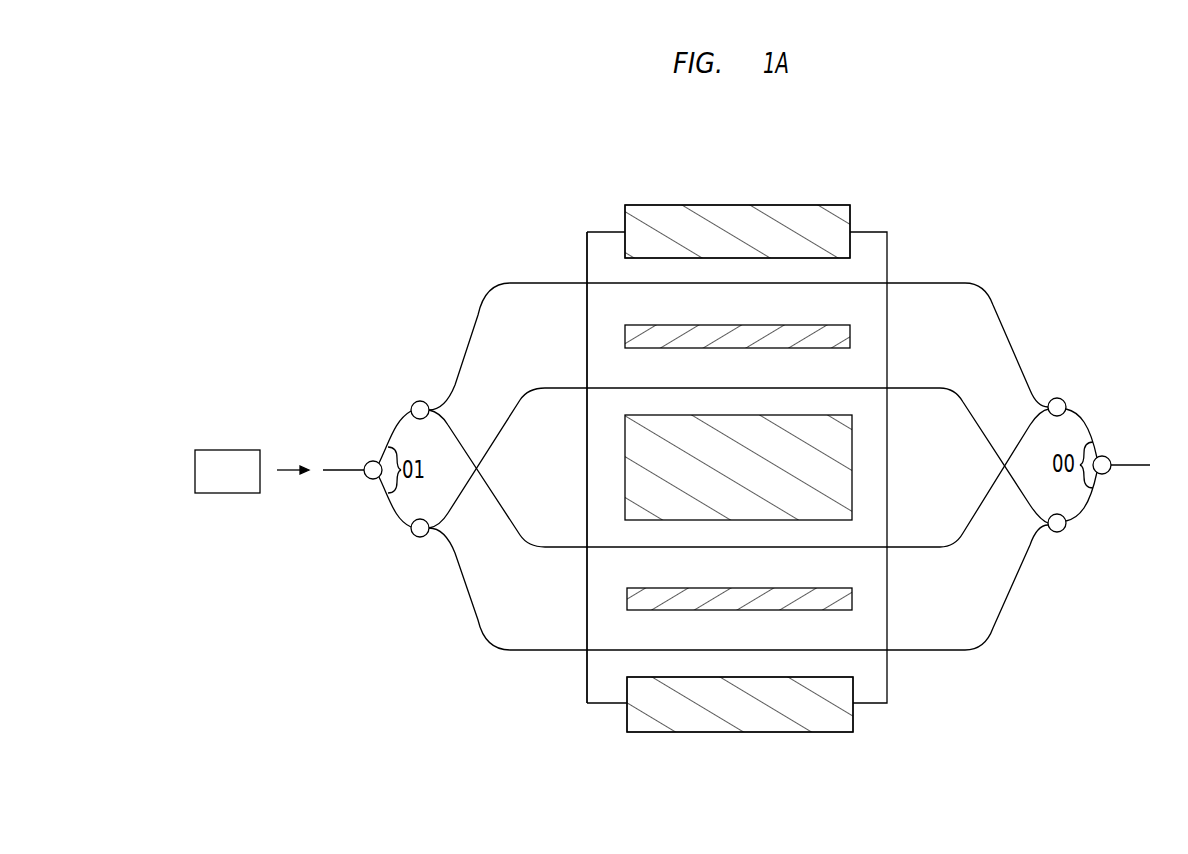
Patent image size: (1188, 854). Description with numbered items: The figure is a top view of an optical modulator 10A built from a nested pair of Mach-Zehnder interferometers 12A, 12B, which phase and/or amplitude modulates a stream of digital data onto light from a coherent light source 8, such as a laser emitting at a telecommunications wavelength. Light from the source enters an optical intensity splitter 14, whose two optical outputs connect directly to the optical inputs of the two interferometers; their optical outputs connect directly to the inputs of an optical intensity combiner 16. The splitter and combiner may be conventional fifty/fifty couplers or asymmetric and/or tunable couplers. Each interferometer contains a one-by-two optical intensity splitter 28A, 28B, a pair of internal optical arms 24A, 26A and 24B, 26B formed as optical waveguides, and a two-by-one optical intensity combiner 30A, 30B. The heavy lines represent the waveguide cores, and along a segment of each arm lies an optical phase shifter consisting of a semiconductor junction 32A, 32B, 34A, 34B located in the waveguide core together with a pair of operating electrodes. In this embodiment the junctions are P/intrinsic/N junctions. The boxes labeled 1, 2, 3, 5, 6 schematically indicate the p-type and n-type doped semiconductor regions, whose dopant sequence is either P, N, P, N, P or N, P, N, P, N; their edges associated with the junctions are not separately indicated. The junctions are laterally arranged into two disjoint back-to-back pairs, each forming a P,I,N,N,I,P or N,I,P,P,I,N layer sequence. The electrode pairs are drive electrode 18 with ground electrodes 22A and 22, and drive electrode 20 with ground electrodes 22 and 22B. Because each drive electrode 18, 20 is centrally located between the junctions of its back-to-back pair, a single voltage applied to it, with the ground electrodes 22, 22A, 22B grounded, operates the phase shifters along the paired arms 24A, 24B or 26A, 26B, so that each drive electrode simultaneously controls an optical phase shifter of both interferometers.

The coherent light source 8 is at (234, 486).
The optical modulator 10A is at (617, 531).
The Mach-Zehnder interferometer 12A is at (1088, 322).
The Mach-Zehnder interferometer 12B is at (1088, 608).
The optical intensity splitter 14 is at (366, 463).
The optical intensity combiner 16 is at (1108, 459).
The drive electrode 18 is at (815, 325).
The drive electrode 20 is at (815, 588).
The ground electrode 22 is at (745, 486).
The ground electrode 22A is at (742, 246).
The ground electrode 22B is at (745, 721).
The internal optical arm 24A is at (995, 310).
The internal optical arm 24B is at (969, 416).
The internal optical arm 26A is at (955, 543).
The internal optical arm 26B is at (990, 636).
The 1×2 optical intensity splitter 28A is at (413, 403).
The 1×2 optical intensity splitter 28B is at (413, 537).
The 2×1 optical intensity combiner 30A is at (1064, 400).
The 2×1 optical intensity combiner 30B is at (1064, 530).
The semiconductor junction 32A is at (571, 272).
The semiconductor junction 32B is at (572, 375).
The semiconductor junction 34A is at (573, 534).
The semiconductor junction 34B is at (576, 642).
The doped semiconductor region 1 is at (607, 268).
The doped semiconductor region 2 is at (609, 319).
The doped semiconductor region 3 is at (609, 429).
The doped semiconductor region 5 is at (609, 583).
The doped semiconductor region 6 is at (609, 688).